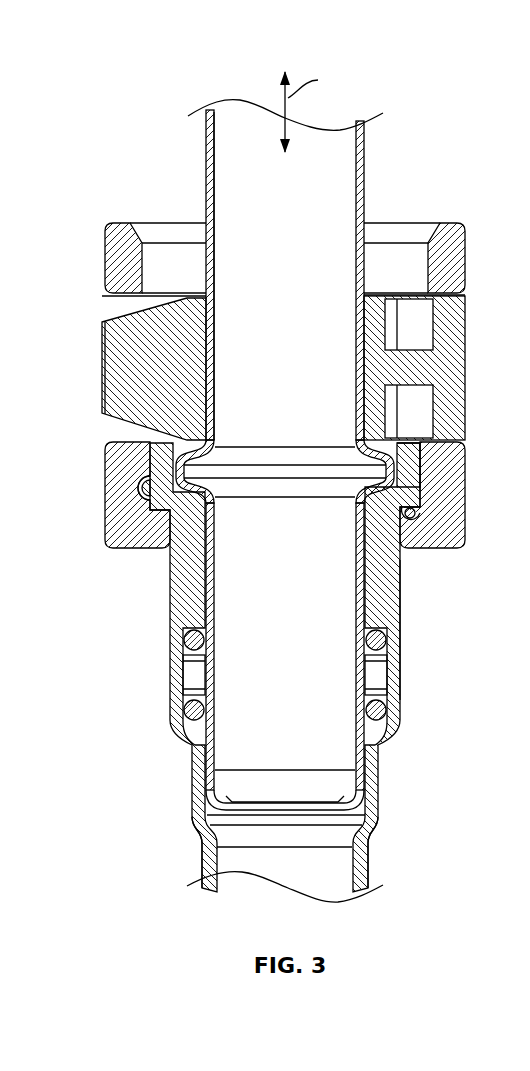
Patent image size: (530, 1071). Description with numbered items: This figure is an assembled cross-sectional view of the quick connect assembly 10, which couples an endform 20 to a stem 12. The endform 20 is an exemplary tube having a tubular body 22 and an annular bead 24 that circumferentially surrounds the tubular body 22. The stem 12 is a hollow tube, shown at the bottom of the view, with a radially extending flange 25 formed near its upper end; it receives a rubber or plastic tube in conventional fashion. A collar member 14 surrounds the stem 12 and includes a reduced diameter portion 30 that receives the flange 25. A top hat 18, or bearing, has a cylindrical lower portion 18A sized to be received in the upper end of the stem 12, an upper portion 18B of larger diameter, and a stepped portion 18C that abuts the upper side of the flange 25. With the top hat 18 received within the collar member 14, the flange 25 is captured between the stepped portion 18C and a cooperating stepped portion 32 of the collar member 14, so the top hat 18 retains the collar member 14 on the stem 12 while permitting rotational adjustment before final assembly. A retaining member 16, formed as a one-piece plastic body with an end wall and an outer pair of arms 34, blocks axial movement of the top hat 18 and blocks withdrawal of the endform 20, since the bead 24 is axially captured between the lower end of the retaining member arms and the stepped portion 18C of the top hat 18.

The quick connect assembly 10 is at (406, 99).
The stem 12 is at (384, 822).
The collar member 14 is at (468, 487).
The retaining member 16 is at (467, 366).
The top hat 18 is at (188, 602).
The lower portion 18A is at (381, 602).
The upper portion 18B is at (148, 488).
The stepped portion 18C is at (414, 508).
The endform 20 is at (367, 172).
The tubular body 22 is at (226, 170).
The annular bead 24 is at (176, 463).
The flange 25 is at (408, 518).
The reduced diameter portion 30 is at (152, 472).
The stepped portion 32 is at (317, 243).
The outer pair of arms 34 is at (316, 282).